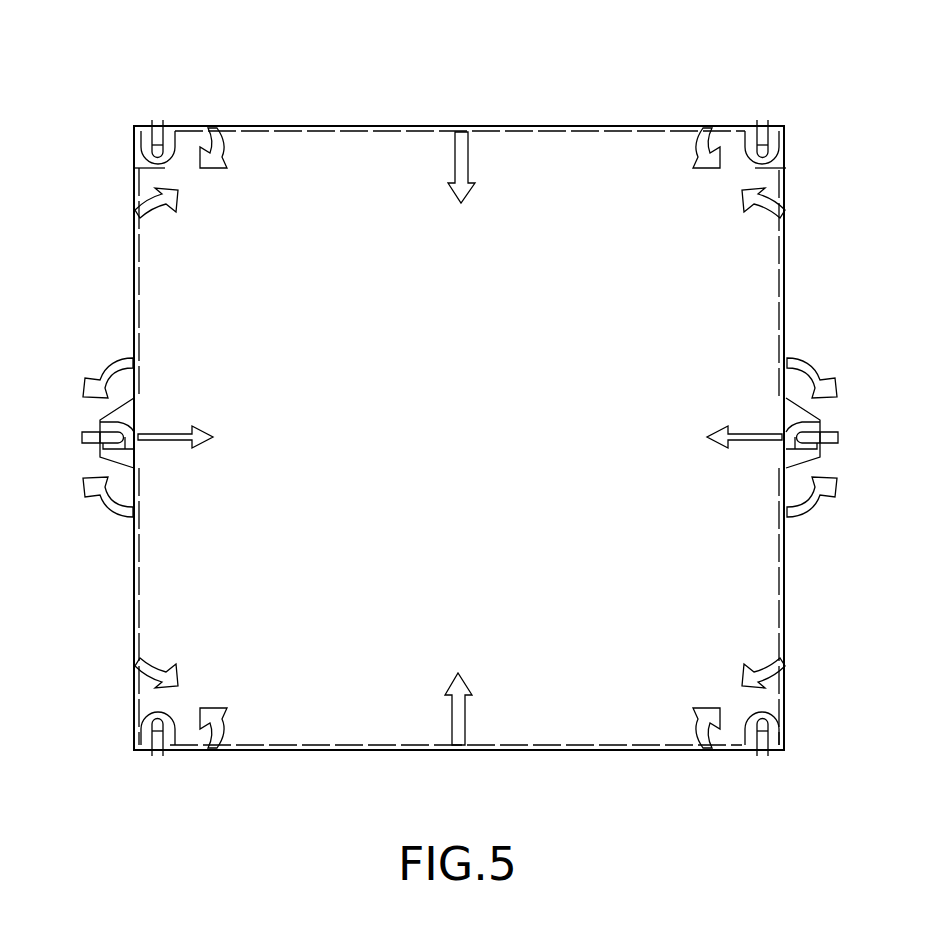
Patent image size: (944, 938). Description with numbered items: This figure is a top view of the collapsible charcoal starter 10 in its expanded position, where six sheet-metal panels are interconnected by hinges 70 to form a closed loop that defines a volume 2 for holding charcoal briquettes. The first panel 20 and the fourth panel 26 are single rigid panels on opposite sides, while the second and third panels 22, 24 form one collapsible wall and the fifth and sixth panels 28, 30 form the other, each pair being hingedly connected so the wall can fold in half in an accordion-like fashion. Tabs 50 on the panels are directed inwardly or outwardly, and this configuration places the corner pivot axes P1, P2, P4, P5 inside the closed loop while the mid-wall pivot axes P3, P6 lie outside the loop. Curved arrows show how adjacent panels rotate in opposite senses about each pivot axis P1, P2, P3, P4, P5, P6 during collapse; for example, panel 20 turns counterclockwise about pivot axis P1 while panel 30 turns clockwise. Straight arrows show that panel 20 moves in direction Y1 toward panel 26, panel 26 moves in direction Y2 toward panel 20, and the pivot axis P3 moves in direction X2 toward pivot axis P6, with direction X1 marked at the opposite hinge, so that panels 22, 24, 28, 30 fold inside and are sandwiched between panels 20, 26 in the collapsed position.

The charcoal starter 10 is at (222, 74).
The volume 2 is at (466, 454).
The first panel 20 is at (423, 750).
The second panel 22 is at (785, 572).
The third panel 24 is at (785, 292).
The fourth panel 26 is at (413, 126).
The fifth panel 28 is at (135, 260).
The sixth panel 30 is at (134, 588).
The tabs 50 is at (166, 160).
The hinge 70 is at (90, 432).
The pivot axis P1 is at (158, 718).
The pivot axis P2 is at (754, 718).
The pivot axis P3 is at (795, 430).
The pivot axis P4 is at (750, 157).
The pivot axis P5 is at (164, 158).
The pivot axis P6 is at (118, 427).
The direction X1 is at (175, 453).
The direction X2 is at (744, 455).
The direction Y1 is at (470, 709).
The direction Y2 is at (473, 167).